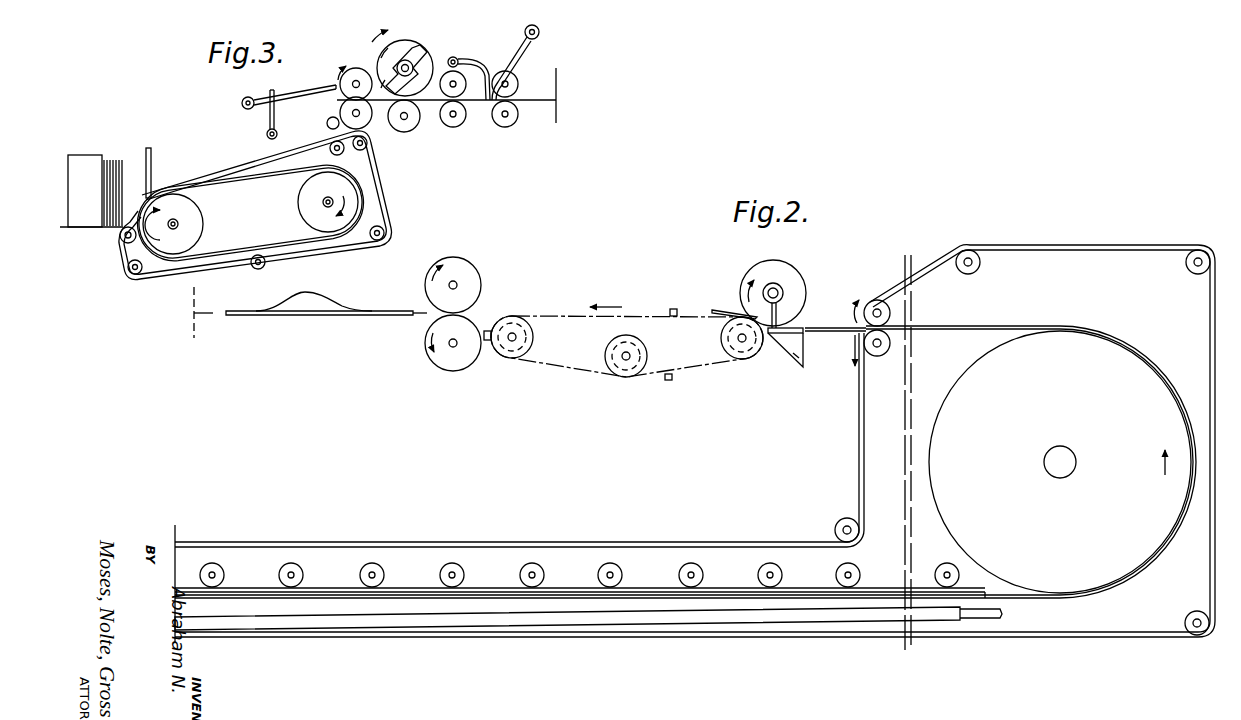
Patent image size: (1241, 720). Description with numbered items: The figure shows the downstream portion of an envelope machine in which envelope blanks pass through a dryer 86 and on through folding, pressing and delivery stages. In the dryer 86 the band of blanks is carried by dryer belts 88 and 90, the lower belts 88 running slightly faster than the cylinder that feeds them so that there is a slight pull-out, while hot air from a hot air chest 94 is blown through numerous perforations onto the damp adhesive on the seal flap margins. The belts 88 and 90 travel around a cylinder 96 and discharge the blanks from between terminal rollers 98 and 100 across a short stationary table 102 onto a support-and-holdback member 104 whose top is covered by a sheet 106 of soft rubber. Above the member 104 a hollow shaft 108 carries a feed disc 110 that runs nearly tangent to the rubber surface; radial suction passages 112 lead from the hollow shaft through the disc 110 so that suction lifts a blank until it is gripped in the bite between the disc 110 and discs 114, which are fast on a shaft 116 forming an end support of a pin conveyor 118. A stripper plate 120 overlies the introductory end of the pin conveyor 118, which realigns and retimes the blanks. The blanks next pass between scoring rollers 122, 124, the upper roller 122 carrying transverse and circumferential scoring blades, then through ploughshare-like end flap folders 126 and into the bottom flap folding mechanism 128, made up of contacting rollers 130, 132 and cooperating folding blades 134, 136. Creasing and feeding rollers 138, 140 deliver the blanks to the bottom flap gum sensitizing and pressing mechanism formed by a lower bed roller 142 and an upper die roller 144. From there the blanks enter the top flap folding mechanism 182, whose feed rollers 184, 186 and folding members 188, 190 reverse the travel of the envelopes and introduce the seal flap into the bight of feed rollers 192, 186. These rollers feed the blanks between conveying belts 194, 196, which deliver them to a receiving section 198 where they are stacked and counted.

In FIG. 2, the dryer 86 is at (618, 647).
In FIG. 2, the lower dryer belts 88 is at (578, 597).
In FIG. 2, the dryer belts 90 is at (583, 586).
In FIG. 2, the hot air chest 94 is at (438, 614).
In FIG. 2, the cylinder 96 is at (1135, 373).
In FIG. 2, the terminal roller 98 is at (874, 300).
In FIG. 2, the terminal roller 100 is at (877, 357).
In FIG. 2, the stationary table 102 is at (834, 335).
In FIG. 2, the support-and-holdback member 104 is at (782, 353).
In FIG. 2, the sheet of soft rubber 106 is at (795, 327).
In FIG. 2, the hollow shaft 108 is at (771, 285).
In FIG. 2, the feed disc 110 is at (754, 272).
In FIG. 2, the radial suction passages 112 is at (778, 312).
In FIG. 2, the discs 114 is at (722, 335).
In FIG. 2, the shaft 116 is at (742, 345).
In FIG. 2, the pin conveyor 118 is at (556, 313).
In FIG. 2, the stripper plate 120 is at (716, 309).
In FIG. 2, the upper scoring roller 122 is at (466, 268).
In FIG. 2, the lower scoring roller 124 is at (465, 366).
In FIG. 2, the end flap folders 126 is at (331, 305).
In FIG. 3, the bottom flap folding mechanism 128 is at (506, 57).
In FIG. 3, the roller 130 is at (511, 81).
In FIG. 3, the roller 132 is at (513, 121).
In FIG. 3, the folding blade 134 is at (505, 46).
In FIG. 3, the folding blade 136 is at (457, 58).
In FIG. 3, the creasing and feeding roller 138 is at (461, 91).
In FIG. 3, the creasing and feeding roller 140 is at (453, 126).
In FIG. 3, the lower bed roller 142 is at (405, 130).
In FIG. 3, the upper die roller 144 is at (429, 50).
In FIG. 3, the top flap folding mechanism 182 is at (325, 76).
In FIG. 3, the feed roller 184 is at (354, 72).
In FIG. 3, the feed roller 186 is at (341, 112).
In FIG. 3, the folding member 188 is at (269, 121).
In FIG. 3, the folding member 190 is at (292, 93).
In FIG. 3, the feed roller 192 is at (327, 125).
In FIG. 3, the conveying belt 194 is at (392, 209).
In FIG. 3, the conveying belt 196 is at (206, 180).
In FIG. 3, the receiving section 198 is at (110, 154).